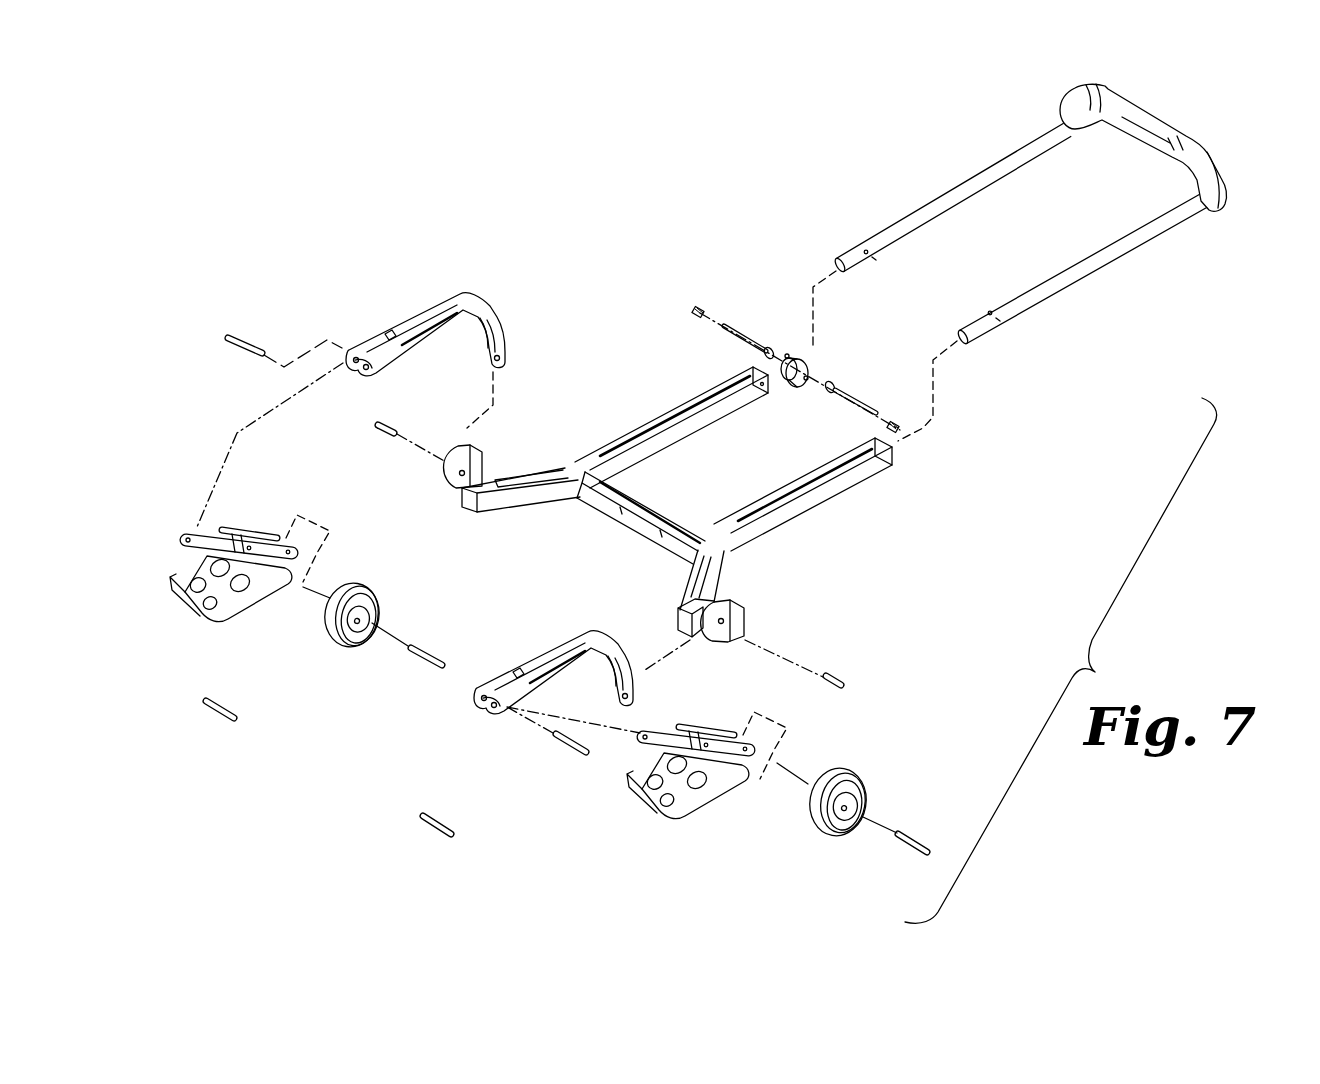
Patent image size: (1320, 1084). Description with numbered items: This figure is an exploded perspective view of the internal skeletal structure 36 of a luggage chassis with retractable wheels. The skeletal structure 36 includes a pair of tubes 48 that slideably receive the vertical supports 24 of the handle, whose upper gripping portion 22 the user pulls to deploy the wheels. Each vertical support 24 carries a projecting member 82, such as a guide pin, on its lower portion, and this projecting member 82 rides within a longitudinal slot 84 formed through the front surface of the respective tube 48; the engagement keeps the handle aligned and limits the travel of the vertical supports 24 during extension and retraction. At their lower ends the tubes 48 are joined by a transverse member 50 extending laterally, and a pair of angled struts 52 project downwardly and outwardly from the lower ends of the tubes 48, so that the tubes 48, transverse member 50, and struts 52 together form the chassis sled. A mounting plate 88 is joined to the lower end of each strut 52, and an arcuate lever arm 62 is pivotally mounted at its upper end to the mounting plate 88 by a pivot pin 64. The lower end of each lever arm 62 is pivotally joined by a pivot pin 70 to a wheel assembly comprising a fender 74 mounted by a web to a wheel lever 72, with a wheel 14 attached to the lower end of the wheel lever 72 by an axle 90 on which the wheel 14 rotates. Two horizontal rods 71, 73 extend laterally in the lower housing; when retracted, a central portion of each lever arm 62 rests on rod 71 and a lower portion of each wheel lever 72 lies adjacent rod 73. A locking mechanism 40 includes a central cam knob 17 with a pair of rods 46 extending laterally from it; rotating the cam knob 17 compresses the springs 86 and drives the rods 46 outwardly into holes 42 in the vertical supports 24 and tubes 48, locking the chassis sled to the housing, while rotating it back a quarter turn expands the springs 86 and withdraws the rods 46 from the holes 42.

The wheel 14 is at (330, 643).
The cam knob 17 is at (800, 393).
The upper gripping portion 22 is at (1235, 168).
The vertical support 24 is at (955, 189).
The internal skeletal structure 36 is at (216, 151).
The locking mechanism 40 is at (845, 342).
The hole 42 is at (1067, 142).
The rod 46 is at (743, 333).
The tube 48 is at (687, 403).
The transverse member 50 is at (620, 523).
The angled strut 52 is at (523, 510).
The lever arm 62 is at (460, 290).
The pivot pin 64 is at (395, 420).
The pivot pin 70 is at (228, 330).
The horizontal rod 71 is at (430, 827).
The wheel lever 72 is at (255, 530).
The horizontal rod 73 is at (218, 723).
The fender 74 is at (192, 631).
The projecting member 82 is at (865, 250).
The slot 84 is at (627, 447).
The spring 86 is at (694, 305).
The mounting plate 88 is at (481, 442).
The axle 90 is at (420, 643).